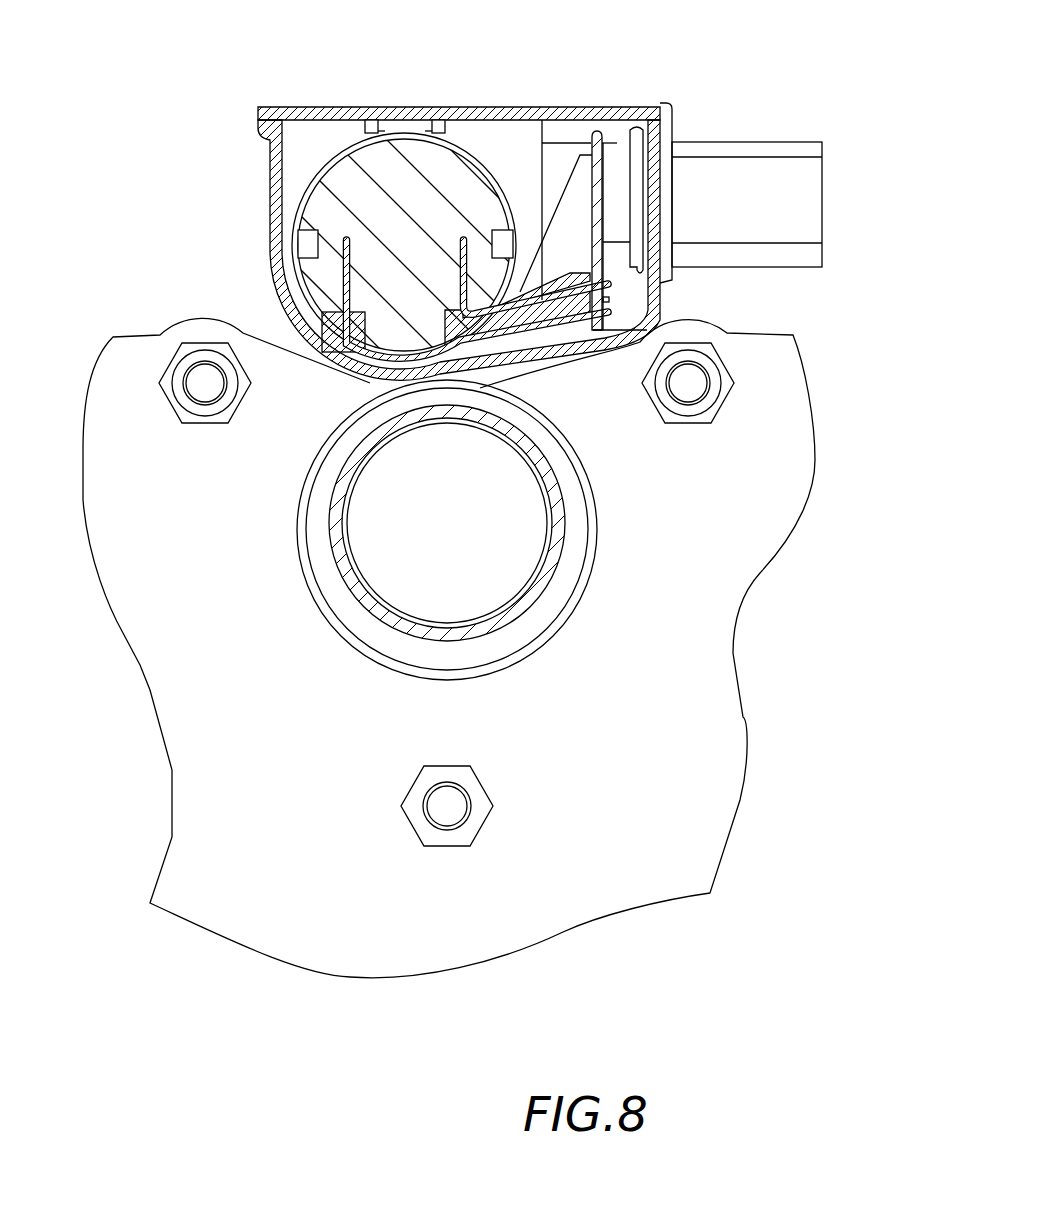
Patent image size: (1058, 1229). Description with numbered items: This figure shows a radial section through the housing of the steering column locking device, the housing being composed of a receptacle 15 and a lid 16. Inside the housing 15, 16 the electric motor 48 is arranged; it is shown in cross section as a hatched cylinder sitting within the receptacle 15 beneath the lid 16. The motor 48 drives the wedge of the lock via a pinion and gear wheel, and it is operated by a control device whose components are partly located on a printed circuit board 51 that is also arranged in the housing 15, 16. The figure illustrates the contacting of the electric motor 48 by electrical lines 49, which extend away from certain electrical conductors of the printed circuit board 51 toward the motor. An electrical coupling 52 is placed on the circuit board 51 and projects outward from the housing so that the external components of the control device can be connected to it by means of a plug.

The receptacle 15 is at (270, 165).
The lid 16 is at (323, 110).
The electric motor 48 is at (402, 185).
The electrical lines 49 is at (560, 283).
The printed circuit board 51 is at (596, 132).
The electrical coupling 52 is at (730, 140).